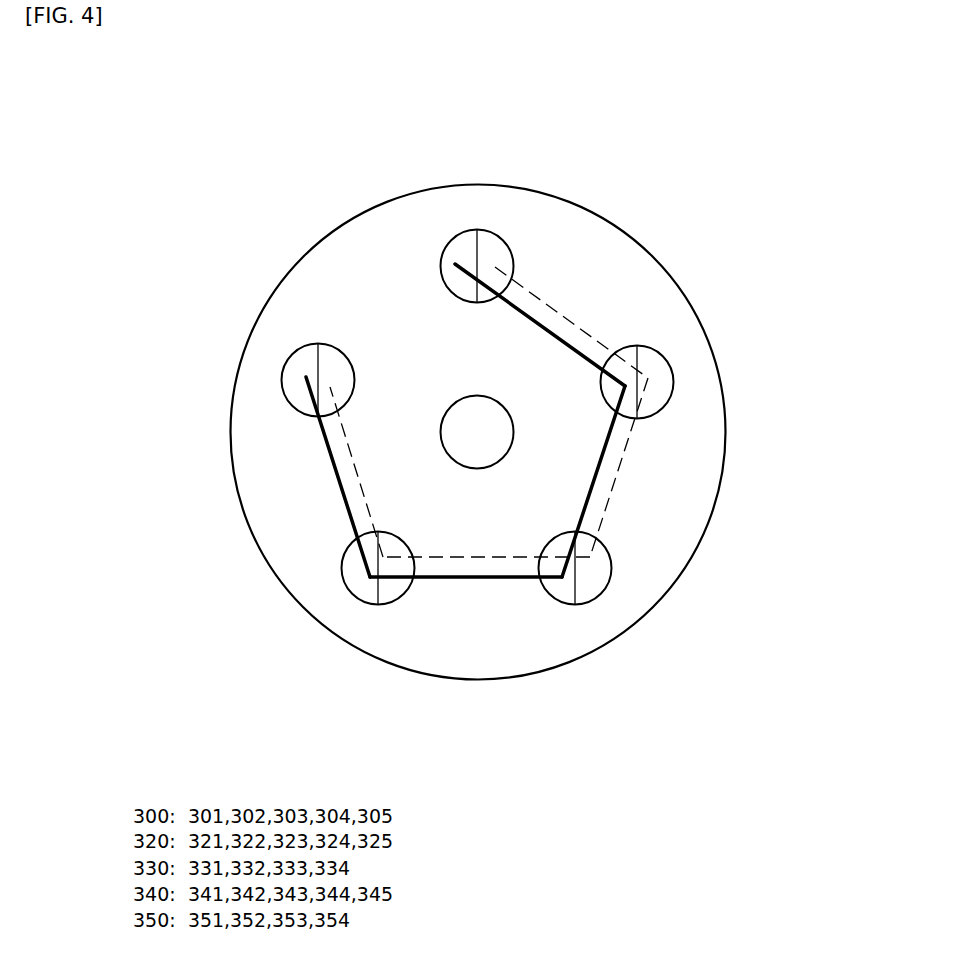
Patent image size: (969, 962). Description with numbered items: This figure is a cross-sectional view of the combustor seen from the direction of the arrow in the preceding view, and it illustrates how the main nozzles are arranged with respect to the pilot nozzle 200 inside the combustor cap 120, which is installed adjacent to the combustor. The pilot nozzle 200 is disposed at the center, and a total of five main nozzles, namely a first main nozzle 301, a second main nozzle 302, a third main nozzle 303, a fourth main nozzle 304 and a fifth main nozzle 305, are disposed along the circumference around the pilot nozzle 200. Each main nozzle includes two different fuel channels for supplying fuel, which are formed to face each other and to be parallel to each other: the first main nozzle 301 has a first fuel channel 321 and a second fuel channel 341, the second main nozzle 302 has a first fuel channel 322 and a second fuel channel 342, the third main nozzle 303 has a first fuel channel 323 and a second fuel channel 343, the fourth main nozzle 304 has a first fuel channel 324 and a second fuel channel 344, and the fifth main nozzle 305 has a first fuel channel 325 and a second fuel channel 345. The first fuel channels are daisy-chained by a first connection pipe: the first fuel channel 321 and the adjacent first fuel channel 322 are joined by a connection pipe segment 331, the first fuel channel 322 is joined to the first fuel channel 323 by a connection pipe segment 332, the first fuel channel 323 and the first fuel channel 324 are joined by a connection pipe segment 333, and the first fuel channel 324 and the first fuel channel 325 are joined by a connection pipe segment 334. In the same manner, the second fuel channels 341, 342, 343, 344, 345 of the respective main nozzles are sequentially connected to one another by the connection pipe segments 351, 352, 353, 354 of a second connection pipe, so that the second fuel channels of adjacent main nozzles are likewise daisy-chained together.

The combustor cap 120 is at (328, 233).
The pilot nozzle 200 is at (460, 418).
The first main nozzle 301 is at (503, 189).
The second main nozzle 302 is at (710, 331).
The third main nozzle 303 is at (645, 624).
The fourth main nozzle 304 is at (357, 638).
The fifth main nozzle 305 is at (239, 327).
The first fuel channel of the first main nozzle 321 is at (452, 252).
The first fuel channel of the second main nozzle 322 is at (630, 355).
The first fuel channel of the third main nozzle 323 is at (565, 590).
The first fuel channel of the fourth main nozzle 324 is at (355, 572).
The first fuel channel of the fifth main nozzle 325 is at (302, 363).
The connection pipe segment 331 is at (533, 315).
The connection pipe segment 332 is at (608, 436).
The connection pipe segment 333 is at (520, 580).
The connection pipe segment 334 is at (340, 478).
The second fuel channel of the first main nozzle 341 is at (498, 250).
The second fuel channel of the second main nozzle 342 is at (668, 388).
The second fuel channel of the third main nozzle 343 is at (611, 570).
The second fuel channel of the fourth main nozzle 344 is at (397, 588).
The second fuel channel of the fifth main nozzle 345 is at (333, 358).
The connection pipe segment 351 is at (572, 322).
The connection pipe segment 352 is at (620, 467).
The connection pipe segment 353 is at (487, 558).
The connection pipe segment 354 is at (372, 503).